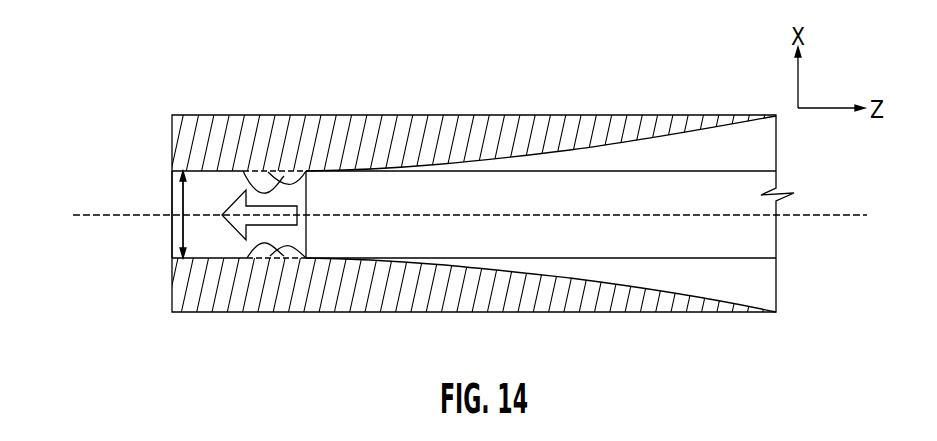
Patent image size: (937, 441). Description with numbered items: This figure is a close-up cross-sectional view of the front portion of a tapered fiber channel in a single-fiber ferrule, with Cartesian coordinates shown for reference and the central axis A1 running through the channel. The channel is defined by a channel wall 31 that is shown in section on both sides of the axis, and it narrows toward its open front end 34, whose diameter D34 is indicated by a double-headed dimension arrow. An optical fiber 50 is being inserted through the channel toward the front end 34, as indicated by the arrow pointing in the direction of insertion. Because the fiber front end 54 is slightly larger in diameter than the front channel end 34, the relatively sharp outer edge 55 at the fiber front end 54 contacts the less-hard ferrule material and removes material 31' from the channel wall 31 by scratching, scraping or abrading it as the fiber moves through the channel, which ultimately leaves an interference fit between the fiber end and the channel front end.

The channel wall 31 is at (475, 189).
The material removed from channel wall 31' is at (250, 216).
The front end of fiber channel 34 is at (172, 225).
The optical fiber 50 is at (666, 171).
The fiber front end 54 is at (305, 187).
The outer edge of fiber front end 55 is at (306, 259).
The diameter of fiber channel front end D34 is at (173, 208).
The central axis A1 is at (798, 216).